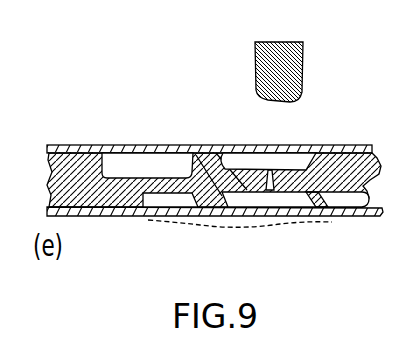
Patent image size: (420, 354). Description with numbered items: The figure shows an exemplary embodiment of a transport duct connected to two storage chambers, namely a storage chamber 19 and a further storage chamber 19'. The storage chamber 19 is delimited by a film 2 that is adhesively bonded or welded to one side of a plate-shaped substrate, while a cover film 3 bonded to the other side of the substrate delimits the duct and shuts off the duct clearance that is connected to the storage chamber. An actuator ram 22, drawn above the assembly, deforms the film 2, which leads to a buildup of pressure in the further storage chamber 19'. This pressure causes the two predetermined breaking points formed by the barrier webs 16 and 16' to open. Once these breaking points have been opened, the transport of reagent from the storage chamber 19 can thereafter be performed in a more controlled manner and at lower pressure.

The film 2 is at (207, 151).
The cover film 3 is at (108, 213).
The storage chamber 19 is at (131, 140).
The further storage chamber 19' is at (288, 133).
The barrier web 16 is at (170, 228).
The barrier web 16' is at (296, 226).
The actuator ram 22 is at (305, 67).